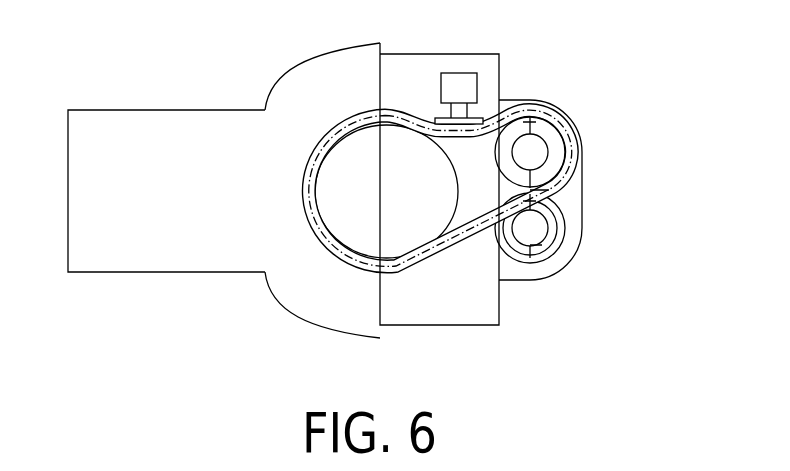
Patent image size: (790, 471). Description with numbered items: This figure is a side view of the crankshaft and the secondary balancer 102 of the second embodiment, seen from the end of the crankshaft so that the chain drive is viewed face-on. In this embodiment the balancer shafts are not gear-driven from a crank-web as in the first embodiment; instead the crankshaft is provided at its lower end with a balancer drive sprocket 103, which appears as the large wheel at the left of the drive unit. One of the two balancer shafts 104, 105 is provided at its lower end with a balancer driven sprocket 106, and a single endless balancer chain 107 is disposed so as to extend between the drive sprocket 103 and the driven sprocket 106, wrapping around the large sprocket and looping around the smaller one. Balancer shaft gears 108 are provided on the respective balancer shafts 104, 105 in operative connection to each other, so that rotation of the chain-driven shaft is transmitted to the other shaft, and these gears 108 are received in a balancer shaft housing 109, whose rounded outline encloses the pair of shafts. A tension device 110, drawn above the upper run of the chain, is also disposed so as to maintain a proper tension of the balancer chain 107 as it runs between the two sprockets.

The secondary balancer 102 is at (584, 184).
The balancer drive sprocket 103 is at (403, 228).
The balancer shaft 104 is at (536, 147).
The balancer shaft 105 is at (531, 235).
The balancer driven sprocket 106 is at (548, 120).
The balancer chain 107 is at (460, 230).
The balancer shaft gears 108 is at (513, 130).
The balancer shaft housing 109 is at (553, 278).
The tension device 110 is at (460, 78).